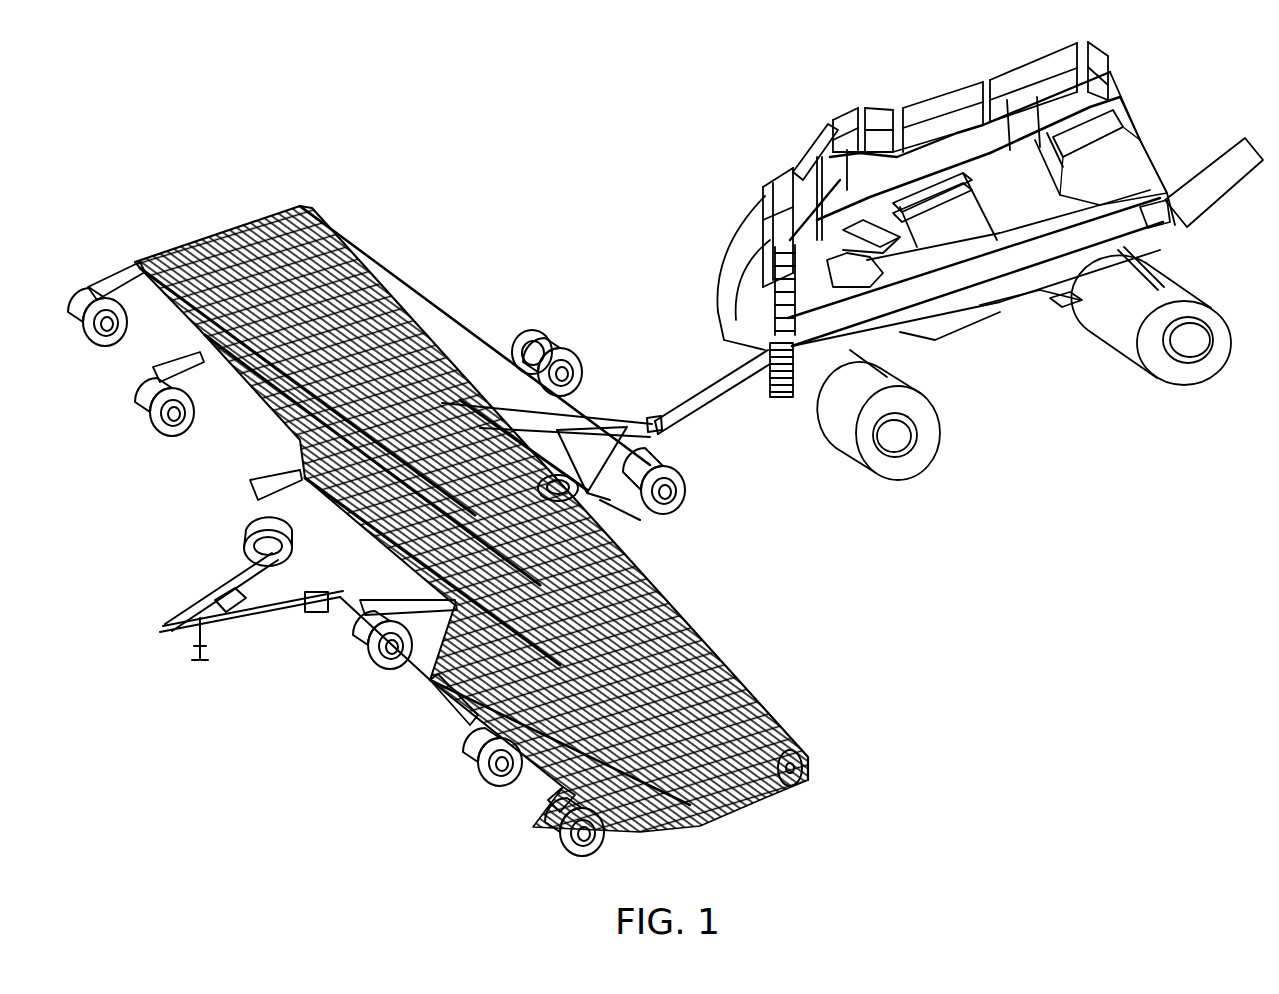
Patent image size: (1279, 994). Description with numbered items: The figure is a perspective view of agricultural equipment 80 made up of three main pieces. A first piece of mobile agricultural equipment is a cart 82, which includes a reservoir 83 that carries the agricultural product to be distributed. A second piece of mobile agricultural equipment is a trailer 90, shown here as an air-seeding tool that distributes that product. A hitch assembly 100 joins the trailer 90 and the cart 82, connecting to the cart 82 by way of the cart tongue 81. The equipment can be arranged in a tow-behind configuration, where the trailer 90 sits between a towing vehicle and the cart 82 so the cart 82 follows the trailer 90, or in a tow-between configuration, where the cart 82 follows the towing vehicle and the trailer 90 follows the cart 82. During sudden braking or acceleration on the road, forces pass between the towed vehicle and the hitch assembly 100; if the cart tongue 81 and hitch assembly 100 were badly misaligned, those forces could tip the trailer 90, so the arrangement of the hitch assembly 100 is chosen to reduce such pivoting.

The agricultural equipment 80 is at (331, 58).
The trailer 90 is at (227, 162).
The hitch assembly 100 is at (651, 302).
The cart 82 is at (827, 58).
The reservoir 83 is at (1133, 163).
The cart tongue 81 is at (731, 398).